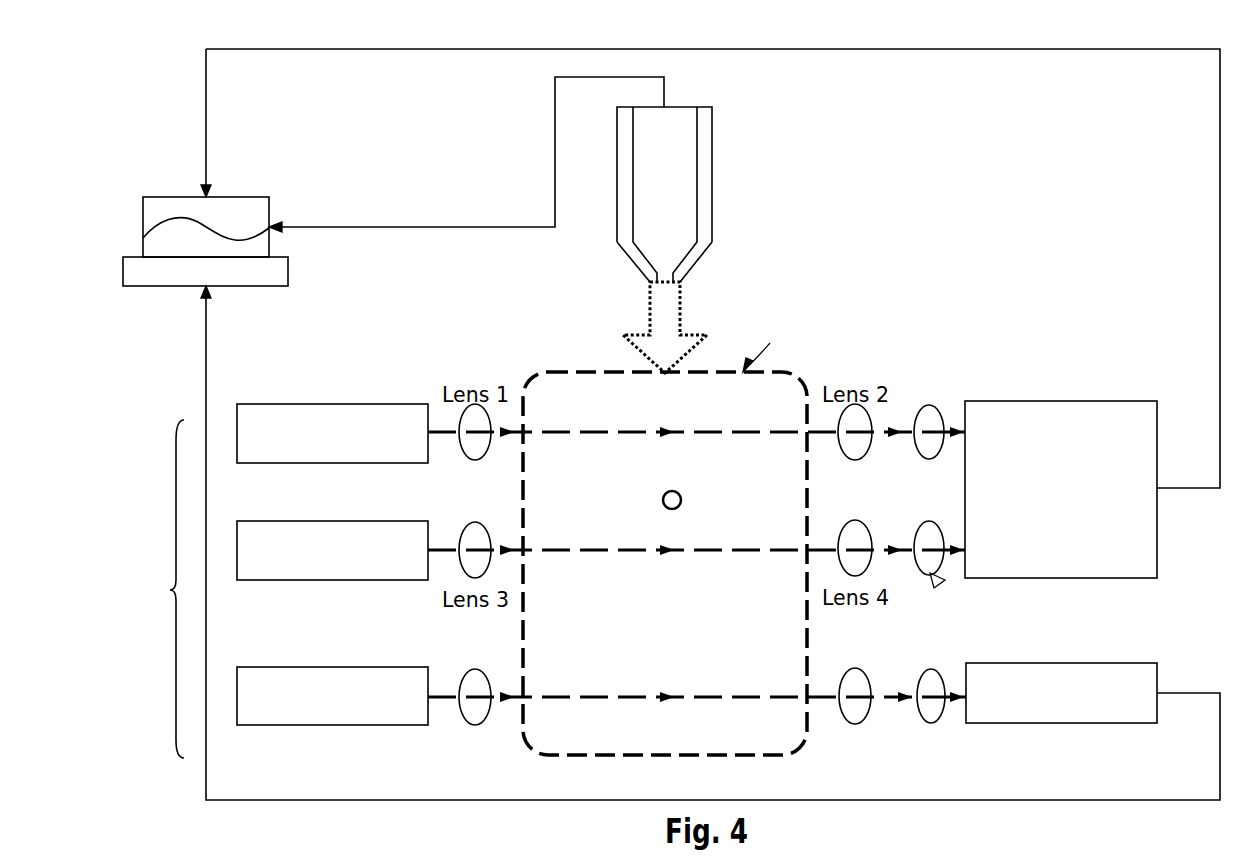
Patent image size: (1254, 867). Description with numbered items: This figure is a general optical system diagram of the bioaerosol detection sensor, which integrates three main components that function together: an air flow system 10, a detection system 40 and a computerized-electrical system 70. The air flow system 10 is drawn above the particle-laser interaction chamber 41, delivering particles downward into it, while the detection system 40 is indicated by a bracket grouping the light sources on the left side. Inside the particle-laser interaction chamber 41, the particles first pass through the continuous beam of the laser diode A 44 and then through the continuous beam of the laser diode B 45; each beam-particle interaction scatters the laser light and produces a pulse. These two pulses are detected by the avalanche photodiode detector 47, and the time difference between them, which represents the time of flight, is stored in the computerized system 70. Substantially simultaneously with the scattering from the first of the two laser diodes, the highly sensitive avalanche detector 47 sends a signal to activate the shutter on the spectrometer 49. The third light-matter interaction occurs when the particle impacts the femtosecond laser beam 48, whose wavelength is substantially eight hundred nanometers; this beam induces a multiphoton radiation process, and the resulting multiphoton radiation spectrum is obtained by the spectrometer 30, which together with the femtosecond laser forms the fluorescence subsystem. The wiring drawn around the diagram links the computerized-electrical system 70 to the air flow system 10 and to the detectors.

The air flow system 10 is at (724, 135).
The spectrometer 30 is at (1090, 396).
The detection system 40 is at (162, 589).
The particle-laser interaction chamber 41 is at (592, 372).
The laser diode A 44 is at (315, 400).
The laser diode B 45 is at (360, 610).
The avalanche photodiode detector 47 is at (936, 392).
The femtosecond laser beam 48 is at (334, 658).
The spectrometer shutter 49 is at (1005, 658).
The computerized-electrical system 70 is at (136, 204).